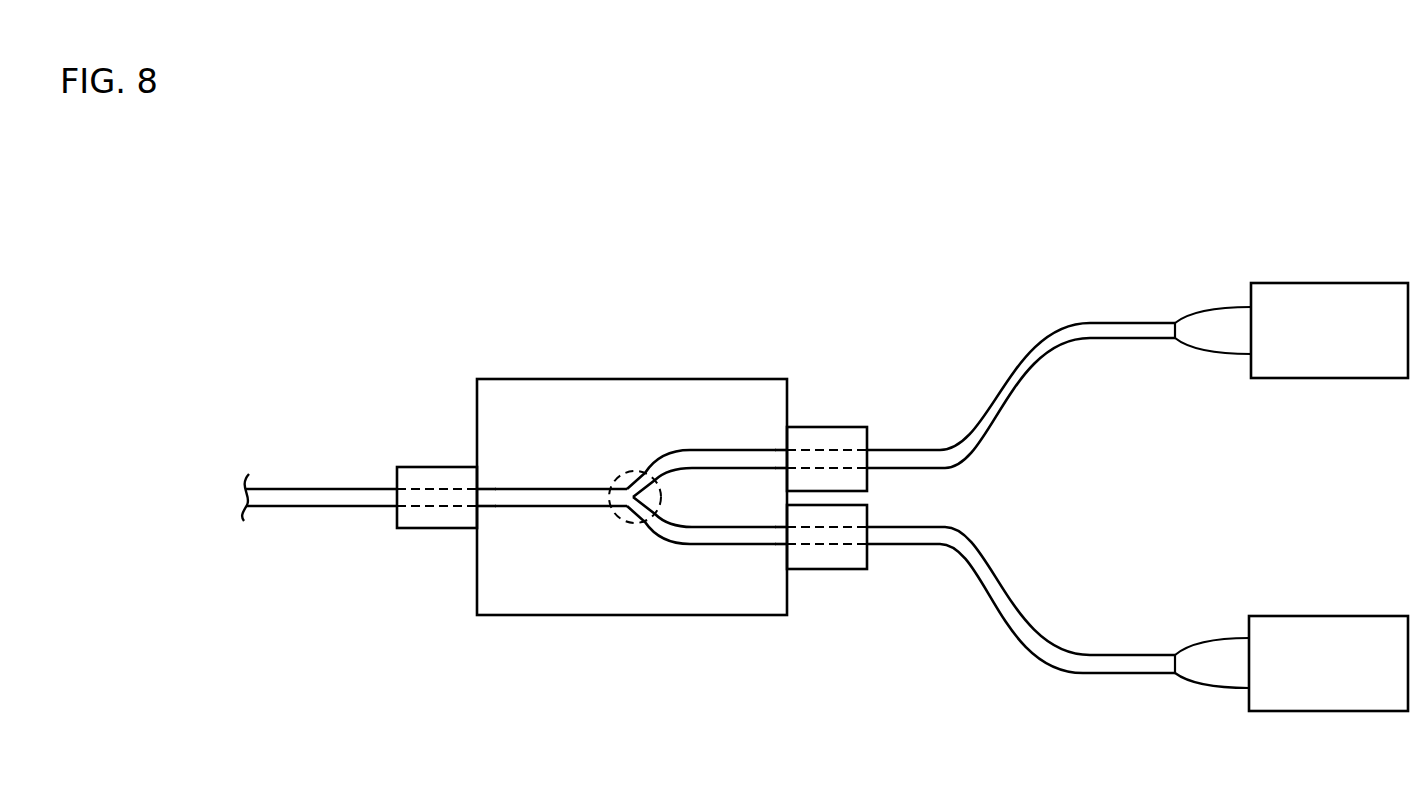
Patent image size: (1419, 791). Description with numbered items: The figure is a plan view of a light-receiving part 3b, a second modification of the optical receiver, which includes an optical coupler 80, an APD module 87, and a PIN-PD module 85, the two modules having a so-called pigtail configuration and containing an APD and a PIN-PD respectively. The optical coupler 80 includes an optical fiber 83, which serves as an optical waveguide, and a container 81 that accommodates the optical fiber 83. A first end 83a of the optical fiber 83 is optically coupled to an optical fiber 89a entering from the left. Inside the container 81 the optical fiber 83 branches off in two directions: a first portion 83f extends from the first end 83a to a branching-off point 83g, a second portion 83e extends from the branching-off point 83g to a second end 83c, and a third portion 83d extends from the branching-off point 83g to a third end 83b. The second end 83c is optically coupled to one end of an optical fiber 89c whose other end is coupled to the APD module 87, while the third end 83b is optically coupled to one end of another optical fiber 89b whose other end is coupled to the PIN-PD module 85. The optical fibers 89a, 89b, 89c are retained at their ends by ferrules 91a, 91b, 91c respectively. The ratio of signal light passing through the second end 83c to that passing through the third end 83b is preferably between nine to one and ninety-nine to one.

The light-receiving part 3b is at (868, 200).
The optical coupler 80 is at (559, 313).
The container 81 is at (648, 379).
The optical fiber 83 is at (582, 507).
The first end 83a is at (477, 497).
The third end 83b is at (788, 458).
The second end 83c is at (788, 535).
The third portion 83d is at (723, 455).
The second portion 83e is at (715, 538).
The first portion 83f is at (552, 495).
The branching-off point 83g is at (621, 522).
The PIN-PD module 85 is at (1342, 283).
The APD module 87 is at (1340, 616).
The optical fiber 89a is at (327, 507).
The optical fiber 89b is at (1053, 333).
The optical fiber 89c is at (1028, 642).
The ferrule 91a is at (433, 528).
The ferrule 91b is at (852, 425).
The ferrule 91c is at (857, 570).